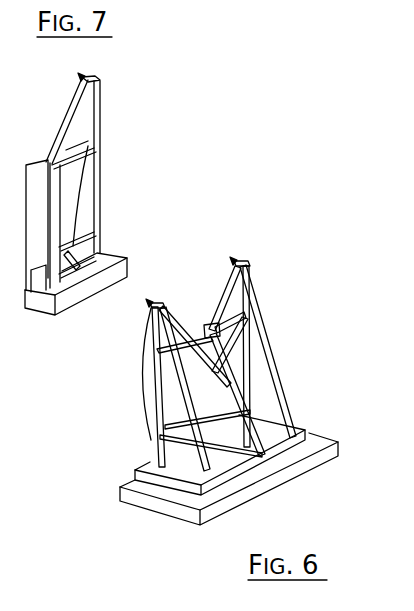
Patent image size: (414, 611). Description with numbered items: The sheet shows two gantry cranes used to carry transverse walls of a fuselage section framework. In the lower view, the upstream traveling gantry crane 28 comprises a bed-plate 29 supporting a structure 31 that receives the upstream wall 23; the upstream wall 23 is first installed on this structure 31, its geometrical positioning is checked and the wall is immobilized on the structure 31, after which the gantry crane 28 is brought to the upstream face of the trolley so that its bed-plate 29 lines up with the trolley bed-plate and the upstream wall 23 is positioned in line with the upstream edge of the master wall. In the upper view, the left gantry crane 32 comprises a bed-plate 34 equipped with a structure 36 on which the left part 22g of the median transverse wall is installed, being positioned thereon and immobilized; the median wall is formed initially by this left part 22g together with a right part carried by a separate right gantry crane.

In FIG. 7, the left gantry crane 32 is at (130, 125).
In FIG. 7, the structure 36 is at (100, 147).
In FIG. 7, the left part 22g is at (88, 187).
In FIG. 7, the bed-plate 34 is at (128, 266).
In FIG. 6, the upstream traveling gantry crane 28 is at (271, 286).
In FIG. 6, the upstream transverse wall 23 is at (232, 337).
In FIG. 6, the structure 31 is at (160, 443).
In FIG. 6, the bed-plate 29 is at (130, 500).